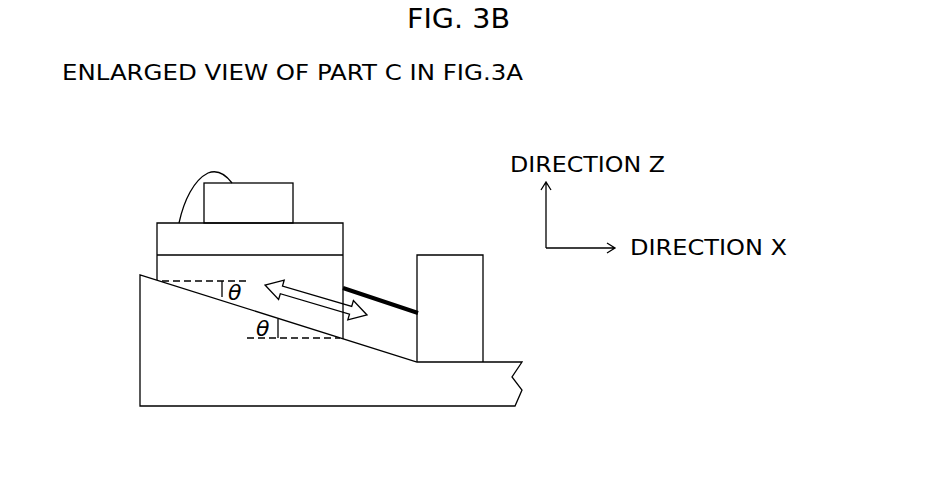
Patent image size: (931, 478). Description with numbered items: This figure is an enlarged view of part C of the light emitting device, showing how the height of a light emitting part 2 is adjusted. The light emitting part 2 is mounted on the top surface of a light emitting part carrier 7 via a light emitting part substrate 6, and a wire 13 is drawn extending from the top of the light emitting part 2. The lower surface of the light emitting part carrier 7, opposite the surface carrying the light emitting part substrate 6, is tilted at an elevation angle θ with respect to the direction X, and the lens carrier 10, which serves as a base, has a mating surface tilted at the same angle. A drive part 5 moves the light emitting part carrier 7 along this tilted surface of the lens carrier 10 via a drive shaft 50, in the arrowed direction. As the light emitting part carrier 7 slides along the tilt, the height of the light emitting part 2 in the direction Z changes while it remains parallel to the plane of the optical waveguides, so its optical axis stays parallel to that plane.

The light emitting part 2 is at (265, 182).
The wire 13 is at (187, 187).
The light emitting part substrate 6 is at (316, 222).
The light emitting part carrier 7 is at (345, 268).
The drive shaft 50 is at (377, 297).
The drive part 5 is at (458, 255).
The lens carrier 10 is at (510, 358).